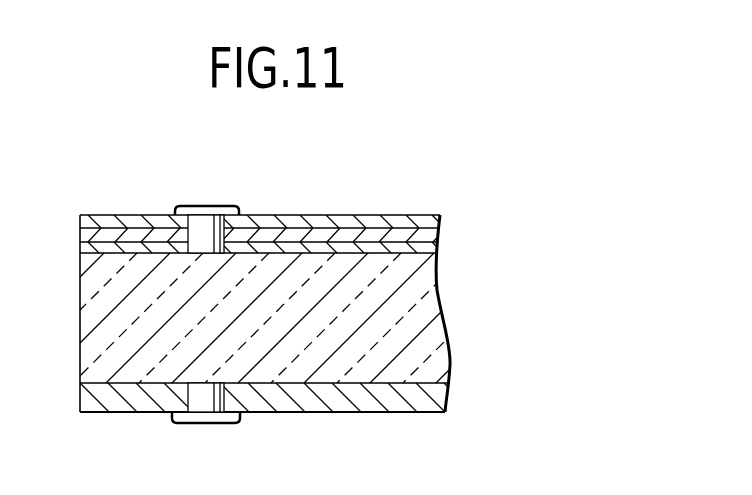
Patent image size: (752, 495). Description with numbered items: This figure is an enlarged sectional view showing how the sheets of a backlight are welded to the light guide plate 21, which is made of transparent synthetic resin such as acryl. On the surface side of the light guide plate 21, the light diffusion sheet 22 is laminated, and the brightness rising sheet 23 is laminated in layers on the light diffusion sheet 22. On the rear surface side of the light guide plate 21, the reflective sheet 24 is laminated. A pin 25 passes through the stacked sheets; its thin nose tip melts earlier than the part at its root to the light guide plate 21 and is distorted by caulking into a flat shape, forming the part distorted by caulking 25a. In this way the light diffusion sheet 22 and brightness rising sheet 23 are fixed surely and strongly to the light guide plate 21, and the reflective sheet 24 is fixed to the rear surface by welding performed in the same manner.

The light guide plate 21 is at (462, 316).
The light diffusion sheet 22 is at (456, 237).
The brightness rising sheet 23 is at (366, 210).
The reflective sheet 24 is at (358, 402).
The pin 25 is at (205, 227).
The part distorted by caulking 25a is at (197, 211).